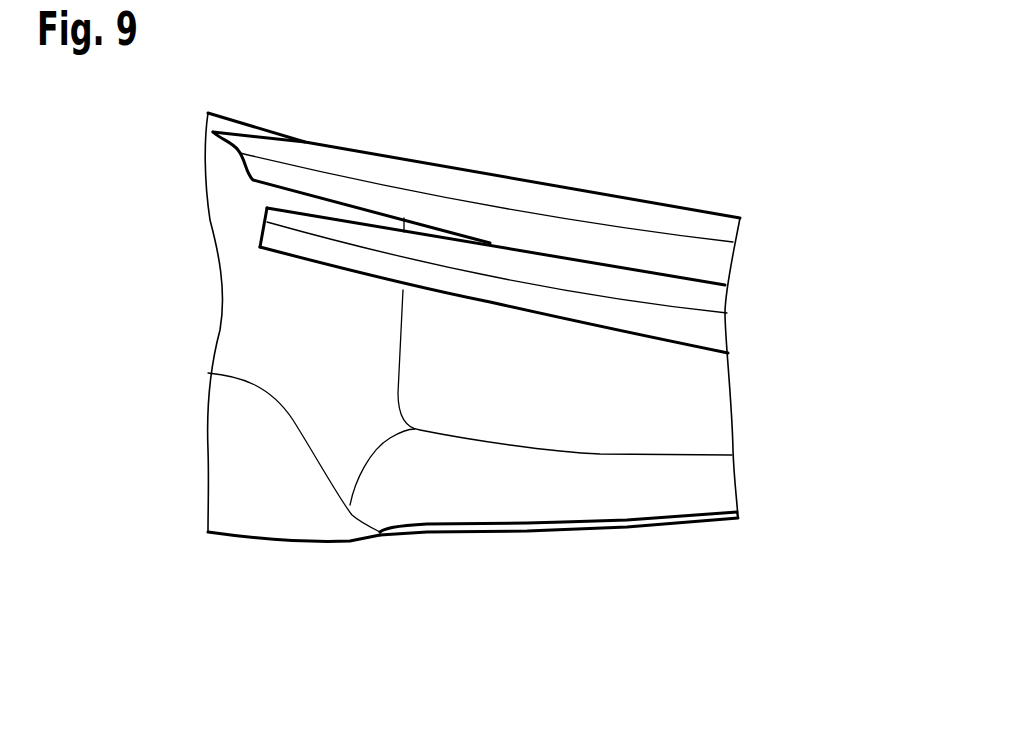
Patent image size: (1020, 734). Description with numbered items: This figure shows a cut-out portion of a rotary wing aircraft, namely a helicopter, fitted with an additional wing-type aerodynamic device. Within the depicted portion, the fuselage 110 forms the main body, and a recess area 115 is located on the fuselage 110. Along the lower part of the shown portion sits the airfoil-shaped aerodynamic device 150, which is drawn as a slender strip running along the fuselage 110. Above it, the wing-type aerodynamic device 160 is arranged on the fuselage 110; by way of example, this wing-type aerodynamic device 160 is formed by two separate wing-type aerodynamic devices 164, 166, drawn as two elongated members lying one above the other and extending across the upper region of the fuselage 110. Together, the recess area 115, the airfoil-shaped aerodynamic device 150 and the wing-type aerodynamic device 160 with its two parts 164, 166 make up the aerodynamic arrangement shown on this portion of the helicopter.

The fuselage 110 is at (236, 487).
The recess area 115 is at (270, 366).
The airfoil-shaped aerodynamic device 150 is at (624, 548).
The wing-type aerodynamic device 160 is at (528, 222).
The wing-type aerodynamic device 164 is at (708, 251).
The wing-type aerodynamic device 166 is at (700, 317).